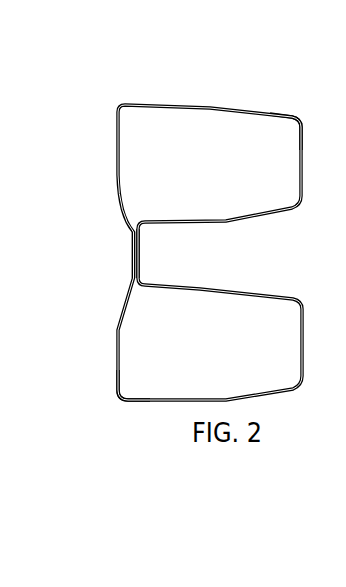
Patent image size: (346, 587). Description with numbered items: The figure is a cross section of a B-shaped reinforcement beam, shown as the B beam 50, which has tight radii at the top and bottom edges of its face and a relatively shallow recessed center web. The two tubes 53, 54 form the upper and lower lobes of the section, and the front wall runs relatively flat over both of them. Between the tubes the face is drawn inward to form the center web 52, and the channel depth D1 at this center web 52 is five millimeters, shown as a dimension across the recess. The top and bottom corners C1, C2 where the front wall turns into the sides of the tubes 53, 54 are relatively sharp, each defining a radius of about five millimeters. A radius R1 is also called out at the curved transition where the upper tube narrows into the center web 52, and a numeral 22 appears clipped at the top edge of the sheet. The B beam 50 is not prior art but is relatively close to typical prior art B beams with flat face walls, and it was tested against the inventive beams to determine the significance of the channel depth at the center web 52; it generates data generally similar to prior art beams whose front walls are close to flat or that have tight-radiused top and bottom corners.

The spring element 22 is at (145, 4).
The B beam 50 is at (250, 88).
The center web 52 is at (139, 262).
The tube 53 is at (120, 380).
The tube 54 is at (300, 118).
The top corner C1 is at (133, 114).
The bottom corner C2 is at (132, 392).
The neck radius R1 is at (170, 178).
The channel depth D1 is at (185, 253).